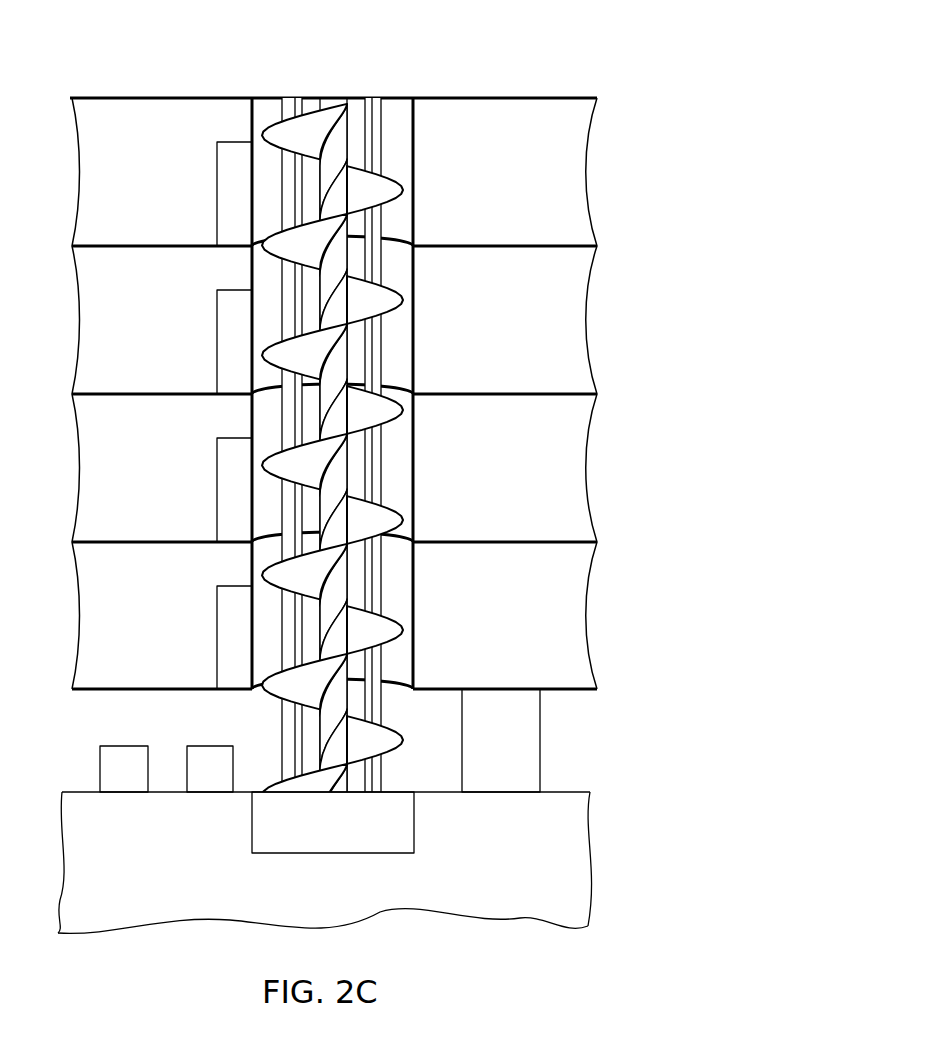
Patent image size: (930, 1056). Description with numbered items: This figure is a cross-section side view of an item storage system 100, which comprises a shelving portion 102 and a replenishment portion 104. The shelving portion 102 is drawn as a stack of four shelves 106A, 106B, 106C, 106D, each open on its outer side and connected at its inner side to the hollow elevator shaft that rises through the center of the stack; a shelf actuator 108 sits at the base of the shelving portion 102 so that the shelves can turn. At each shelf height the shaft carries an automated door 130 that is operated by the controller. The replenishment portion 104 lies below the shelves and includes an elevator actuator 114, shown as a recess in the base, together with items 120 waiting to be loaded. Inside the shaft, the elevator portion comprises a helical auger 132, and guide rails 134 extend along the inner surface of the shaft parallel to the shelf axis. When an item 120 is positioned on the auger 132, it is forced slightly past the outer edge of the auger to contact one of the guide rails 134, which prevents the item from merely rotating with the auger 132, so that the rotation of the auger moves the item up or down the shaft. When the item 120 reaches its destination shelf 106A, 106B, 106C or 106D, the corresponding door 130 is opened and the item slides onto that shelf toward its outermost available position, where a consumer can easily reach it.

The item storage system 100 is at (668, 98).
The shelving portion 102 is at (532, 98).
The replenishment portion 104 is at (582, 762).
The shelf 106A is at (153, 689).
The shelf 106B is at (153, 542).
The shelf 106C is at (153, 394).
The shelf 106D is at (153, 246).
The shelf actuator 108 is at (540, 720).
The elevator actuator 114 is at (414, 828).
The items 120 is at (197, 744).
The automated doors 130 is at (233, 142).
The helical auger 132 is at (432, 728).
The guide rails 134 is at (291, 107).